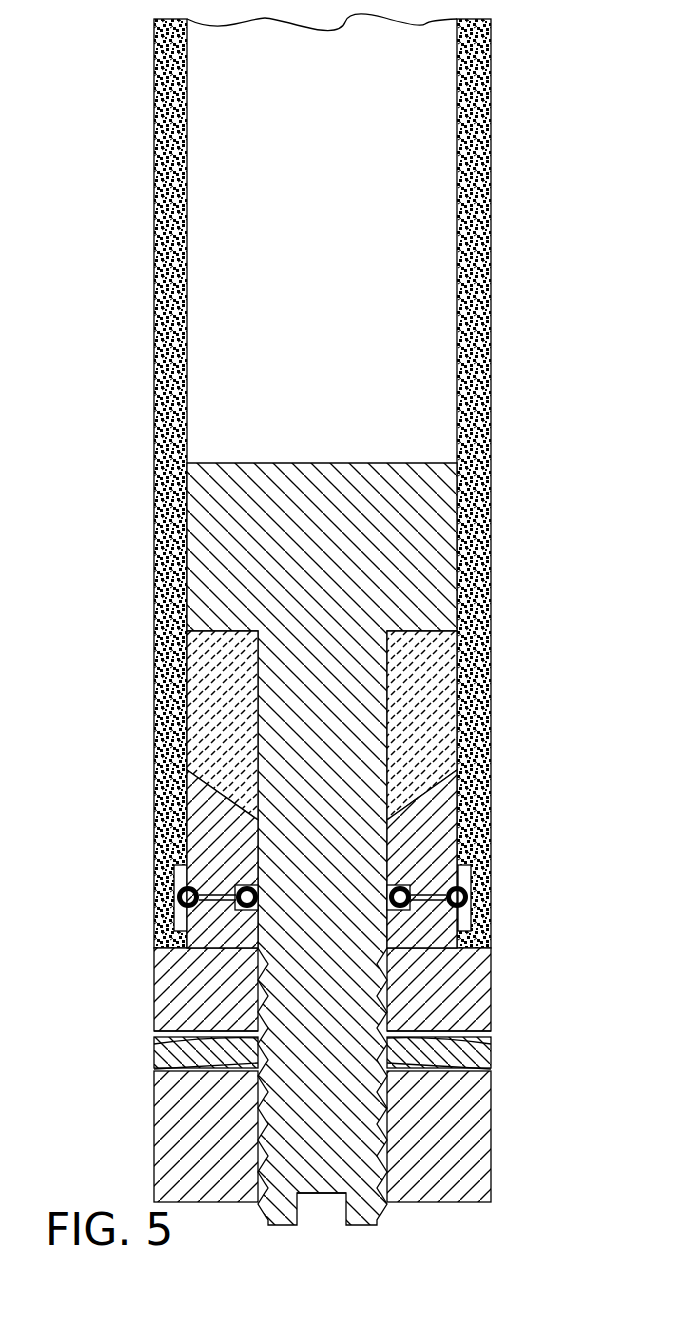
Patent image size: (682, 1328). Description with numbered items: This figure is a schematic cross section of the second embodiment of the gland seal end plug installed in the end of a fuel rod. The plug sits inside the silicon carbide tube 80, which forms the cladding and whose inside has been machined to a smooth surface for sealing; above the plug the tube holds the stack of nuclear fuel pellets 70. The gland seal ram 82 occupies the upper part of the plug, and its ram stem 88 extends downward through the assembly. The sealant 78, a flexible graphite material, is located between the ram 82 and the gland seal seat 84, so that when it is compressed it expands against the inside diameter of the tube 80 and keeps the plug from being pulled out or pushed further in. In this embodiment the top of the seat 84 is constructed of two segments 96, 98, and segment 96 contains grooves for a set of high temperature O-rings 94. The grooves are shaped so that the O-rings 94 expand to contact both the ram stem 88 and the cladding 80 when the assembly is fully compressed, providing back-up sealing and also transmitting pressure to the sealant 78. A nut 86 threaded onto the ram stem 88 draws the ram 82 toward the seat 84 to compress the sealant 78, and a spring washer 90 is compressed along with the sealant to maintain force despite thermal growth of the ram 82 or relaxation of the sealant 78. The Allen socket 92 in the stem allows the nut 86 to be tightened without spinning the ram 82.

The nuclear fuel pellets 70 is at (328, 231).
The silicon carbide tube 80 is at (492, 193).
The gland seal ram 82 is at (445, 540).
The sealant 78 is at (448, 702).
The gland seal ram stem 88 is at (367, 762).
The seat segment containing O-ring grooves 96 is at (440, 828).
The high temperature O-rings 94 is at (405, 883).
The gland seal seat 84 is at (491, 968).
The seat segment 98 is at (491, 1015).
The spring washer 90 is at (491, 1062).
The nut 86 is at (491, 1138).
The Allen socket 92 is at (315, 1217).